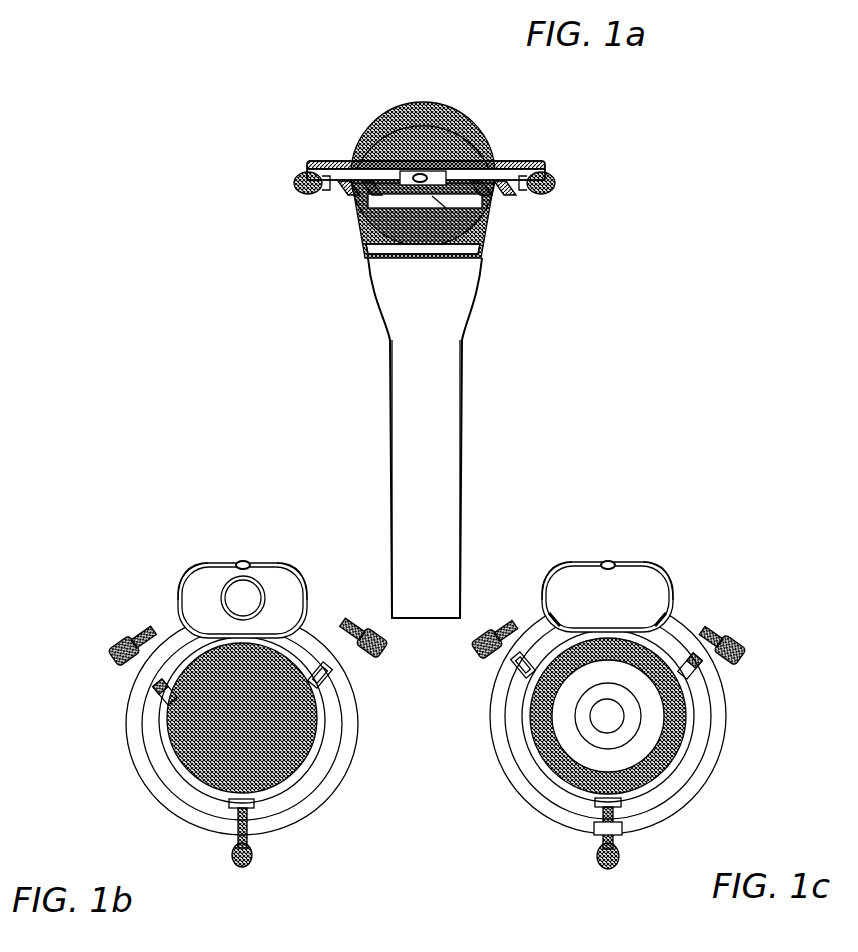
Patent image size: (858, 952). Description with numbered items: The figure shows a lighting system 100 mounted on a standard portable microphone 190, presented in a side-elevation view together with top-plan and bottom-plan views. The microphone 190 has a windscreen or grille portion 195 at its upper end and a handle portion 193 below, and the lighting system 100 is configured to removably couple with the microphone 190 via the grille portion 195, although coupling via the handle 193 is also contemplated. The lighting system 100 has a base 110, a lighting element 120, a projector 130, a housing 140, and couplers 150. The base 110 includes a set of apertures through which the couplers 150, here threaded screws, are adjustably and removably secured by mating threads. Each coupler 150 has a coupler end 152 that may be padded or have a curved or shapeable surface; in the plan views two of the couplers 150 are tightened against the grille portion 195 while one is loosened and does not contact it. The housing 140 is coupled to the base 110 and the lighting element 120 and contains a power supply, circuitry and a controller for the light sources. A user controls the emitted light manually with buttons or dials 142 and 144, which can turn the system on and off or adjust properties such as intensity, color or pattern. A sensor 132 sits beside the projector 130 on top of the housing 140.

In FIG. 1a, the lighting system 100 is at (288, 105).
In FIG. 1b, the lighting system 100 is at (115, 568).
In FIG. 1c, the lighting system 100 is at (630, 534).
In FIG. 1a, the base 110 is at (352, 222).
In FIG. 1b, the base 110 is at (242, 720).
In FIG. 1c, the base 110 is at (492, 690).
In FIG. 1a, the lighting element 120 is at (345, 163).
In FIG. 1b, the lighting element 120 is at (126, 706).
In FIG. 1a, the projector 130 is at (405, 100).
In FIG. 1b, the projector 130 is at (246, 597).
In FIG. 1b, the sensor 132 is at (243, 560).
In FIG. 1a, the housing 140 is at (492, 232).
In FIG. 1b, the housing 140 is at (204, 578).
In FIG. 1c, the housing 140 is at (578, 578).
In FIG. 1b, the button 142 is at (304, 600).
In FIG. 1c, the button 142 is at (545, 594).
In FIG. 1b, the button 144 is at (180, 596).
In FIG. 1c, the button 144 is at (670, 600).
In FIG. 1a, the coupler 150 is at (302, 196).
In FIG. 1b, the coupler 150 is at (252, 862).
In FIG. 1c, the coupler 150 is at (600, 858).
In FIG. 1b, the coupler end 152 is at (256, 808).
In FIG. 1c, the coupler end 152 is at (600, 812).
In FIG. 1a, the microphone 190 is at (384, 377).
In FIG. 1a, the handle portion 193 is at (410, 442).
In FIG. 1c, the handle portion 193 is at (570, 735).
In FIG. 1a, the windscreen or grille portion 195 is at (480, 122).